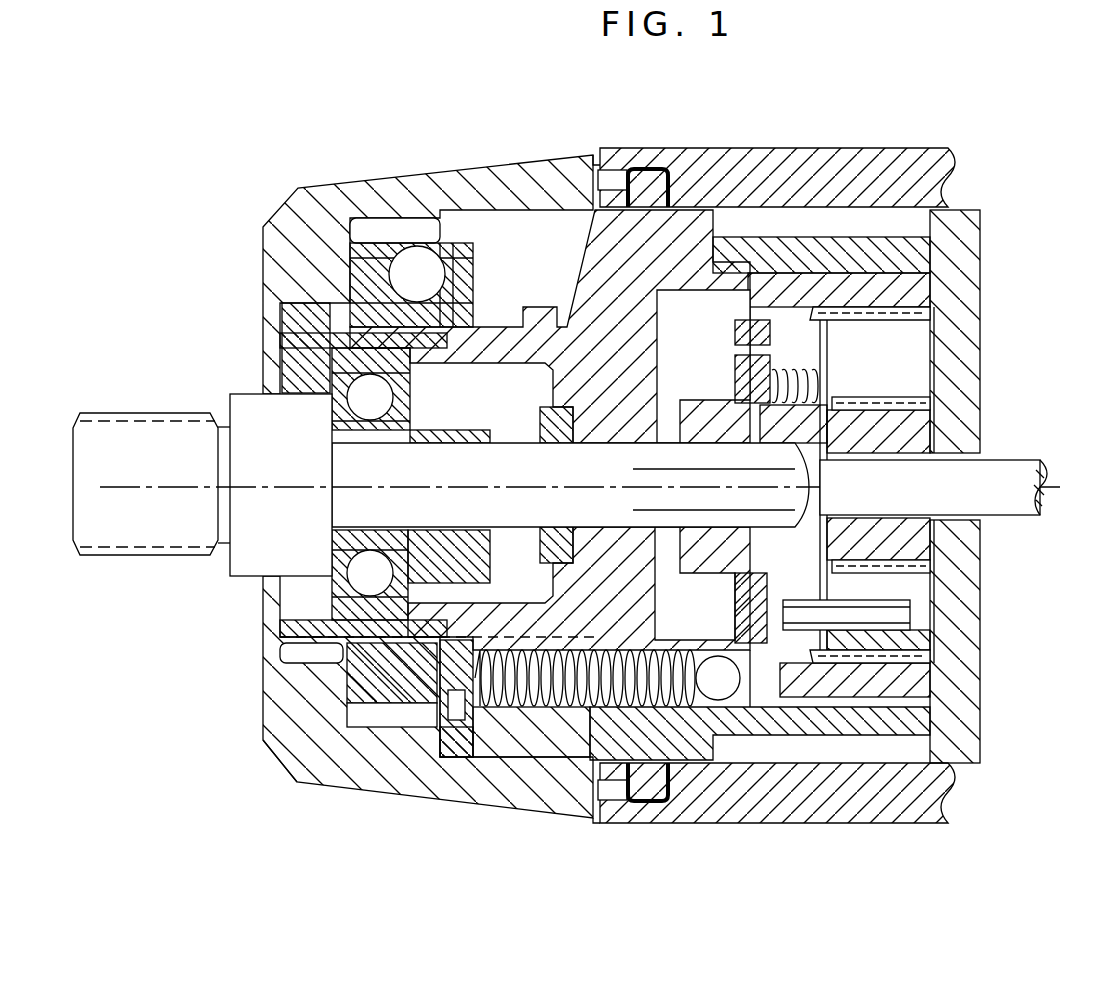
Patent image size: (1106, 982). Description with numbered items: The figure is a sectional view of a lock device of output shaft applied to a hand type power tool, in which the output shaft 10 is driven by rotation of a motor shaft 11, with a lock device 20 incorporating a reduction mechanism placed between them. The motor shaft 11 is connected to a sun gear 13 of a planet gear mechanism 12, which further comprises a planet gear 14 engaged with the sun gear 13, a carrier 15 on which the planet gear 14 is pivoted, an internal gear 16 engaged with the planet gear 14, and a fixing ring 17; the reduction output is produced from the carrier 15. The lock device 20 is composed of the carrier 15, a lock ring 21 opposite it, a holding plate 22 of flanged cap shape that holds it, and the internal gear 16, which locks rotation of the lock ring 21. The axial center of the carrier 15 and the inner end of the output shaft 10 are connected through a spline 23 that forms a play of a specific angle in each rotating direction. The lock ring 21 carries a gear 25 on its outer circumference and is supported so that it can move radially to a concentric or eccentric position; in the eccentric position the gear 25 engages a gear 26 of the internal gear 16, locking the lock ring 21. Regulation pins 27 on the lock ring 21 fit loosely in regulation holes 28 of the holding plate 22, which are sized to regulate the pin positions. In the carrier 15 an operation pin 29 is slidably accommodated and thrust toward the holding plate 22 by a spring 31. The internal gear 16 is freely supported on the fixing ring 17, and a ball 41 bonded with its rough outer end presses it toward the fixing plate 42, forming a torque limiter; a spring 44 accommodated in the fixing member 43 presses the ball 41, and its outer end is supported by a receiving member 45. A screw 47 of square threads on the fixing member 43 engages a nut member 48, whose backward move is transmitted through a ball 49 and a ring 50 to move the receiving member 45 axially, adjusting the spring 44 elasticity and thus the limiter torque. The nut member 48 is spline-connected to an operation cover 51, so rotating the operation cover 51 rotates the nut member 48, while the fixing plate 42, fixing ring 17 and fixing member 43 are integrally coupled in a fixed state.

The output shaft 10 is at (145, 530).
The motor shaft 11 is at (1036, 478).
The planet gear mechanism 12 is at (900, 380).
The sun gear 13 is at (918, 548).
The planet gear 14 is at (920, 648).
The carrier 15 is at (858, 431).
The internal gear 16 is at (920, 695).
The fixing ring 17 is at (908, 726).
The lock device 20 is at (788, 306).
The lock ring 21 is at (793, 753).
The holding plate 22 is at (711, 573).
The spline 23 is at (643, 478).
The gear 25 is at (785, 708).
The gear 26 is at (768, 668).
The regulation pin 27 is at (741, 346).
The regulation hole 28 is at (741, 374).
The operation pin 29 is at (953, 196).
The spring 31 is at (908, 306).
The ball 41 is at (715, 708).
The fixing plate 42 is at (961, 296).
The fixing member 43 is at (581, 244).
The spring 44 is at (530, 718).
The receiving member 45 is at (463, 735).
The screw 47 is at (533, 314).
The nut member 48 is at (343, 223).
The ball 49 is at (413, 276).
The ring 50 is at (445, 748).
The operation cover 51 is at (316, 788).